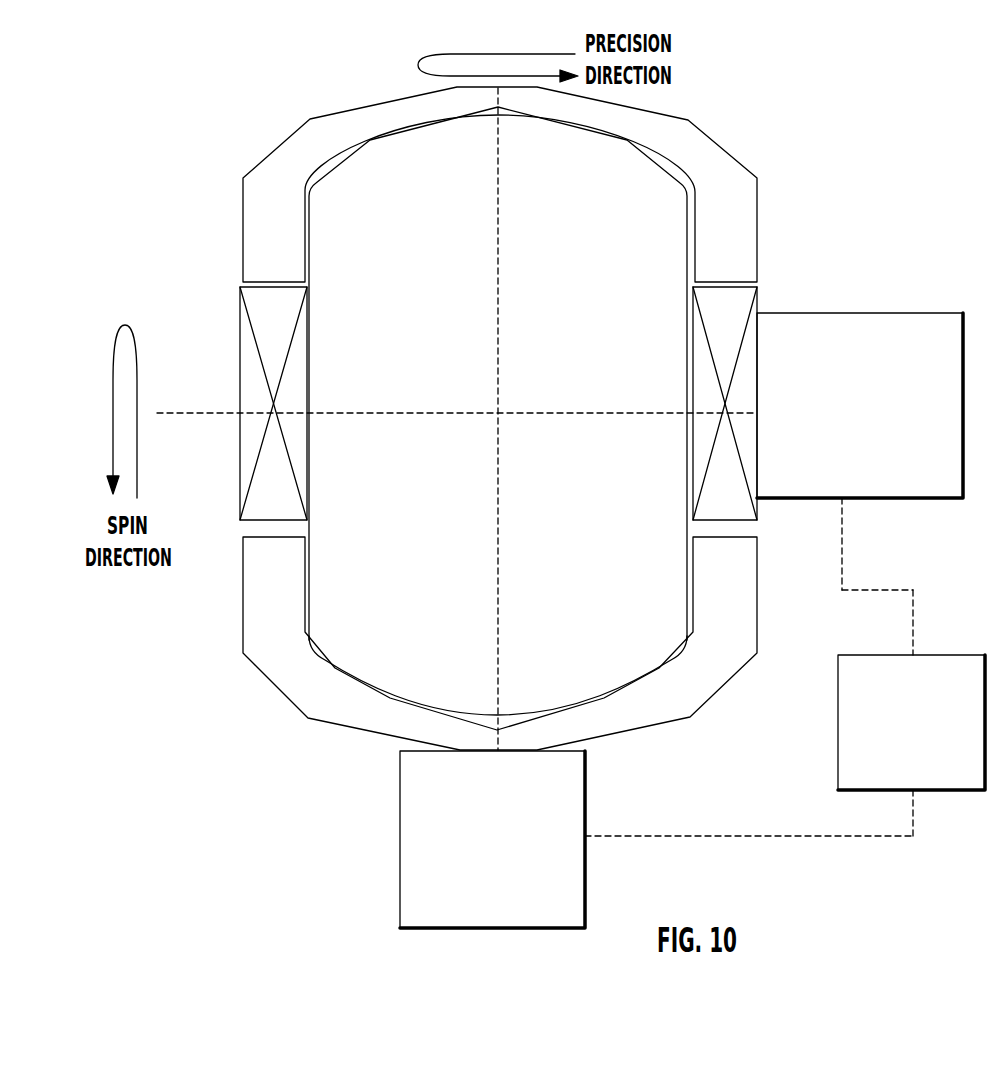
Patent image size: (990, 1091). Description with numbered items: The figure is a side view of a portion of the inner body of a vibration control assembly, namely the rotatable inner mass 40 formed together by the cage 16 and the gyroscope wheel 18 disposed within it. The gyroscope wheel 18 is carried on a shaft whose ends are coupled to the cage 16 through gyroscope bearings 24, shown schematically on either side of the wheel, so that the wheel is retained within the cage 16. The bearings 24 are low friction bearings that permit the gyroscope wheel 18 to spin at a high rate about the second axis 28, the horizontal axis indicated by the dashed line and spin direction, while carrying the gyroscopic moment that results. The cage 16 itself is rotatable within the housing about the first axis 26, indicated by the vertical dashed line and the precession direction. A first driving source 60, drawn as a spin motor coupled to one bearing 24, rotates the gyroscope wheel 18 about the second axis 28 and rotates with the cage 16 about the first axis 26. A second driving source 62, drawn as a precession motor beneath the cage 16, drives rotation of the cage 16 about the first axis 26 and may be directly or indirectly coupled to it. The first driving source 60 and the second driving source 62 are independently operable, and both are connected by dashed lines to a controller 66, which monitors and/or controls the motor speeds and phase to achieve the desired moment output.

The cage 16 is at (273, 195).
The gyroscope wheel 18 is at (328, 651).
The gyroscope bearing 24 is at (272, 313).
The first axis 26 is at (491, 682).
The second axis 28 is at (222, 414).
The rotatable inner mass 40 is at (866, 205).
The first driving source 60 is at (860, 484).
The second driving source 62 is at (656, 839).
The controller 66 is at (911, 722).